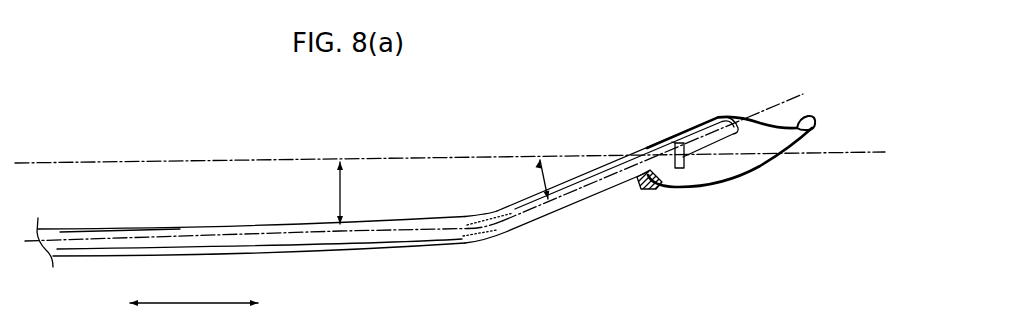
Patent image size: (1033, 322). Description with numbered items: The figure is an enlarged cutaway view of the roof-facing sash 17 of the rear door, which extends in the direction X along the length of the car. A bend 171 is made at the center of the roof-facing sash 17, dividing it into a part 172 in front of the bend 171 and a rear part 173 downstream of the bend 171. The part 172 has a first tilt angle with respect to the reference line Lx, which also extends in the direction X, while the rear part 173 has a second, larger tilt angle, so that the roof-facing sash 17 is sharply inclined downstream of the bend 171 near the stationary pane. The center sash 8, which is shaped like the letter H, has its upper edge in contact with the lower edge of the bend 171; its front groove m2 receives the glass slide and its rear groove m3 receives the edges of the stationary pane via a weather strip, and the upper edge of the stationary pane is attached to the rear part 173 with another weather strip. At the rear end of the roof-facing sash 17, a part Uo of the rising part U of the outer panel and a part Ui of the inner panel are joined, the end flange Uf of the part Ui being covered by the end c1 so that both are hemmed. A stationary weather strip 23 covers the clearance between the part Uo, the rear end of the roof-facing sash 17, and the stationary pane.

The roof-facing sash 17 is at (414, 198).
The bend 171 is at (492, 247).
The part of roof-facing sash 172 is at (288, 238).
The rear part of roof-facing sash 173 is at (596, 168).
The center sash 8 is at (456, 225).
The stationary weather strip 23 is at (645, 190).
The rising part U is at (769, 164).
The part of inner panel Ui is at (733, 118).
The part of rising part Uo is at (708, 187).
The end flange Uf is at (808, 134).
The end c1 is at (818, 124).
The reference line Lx is at (208, 158).
The direction X is at (202, 303).
The front groove m2 is at (443, 237).
The rear groove m3 is at (498, 223).